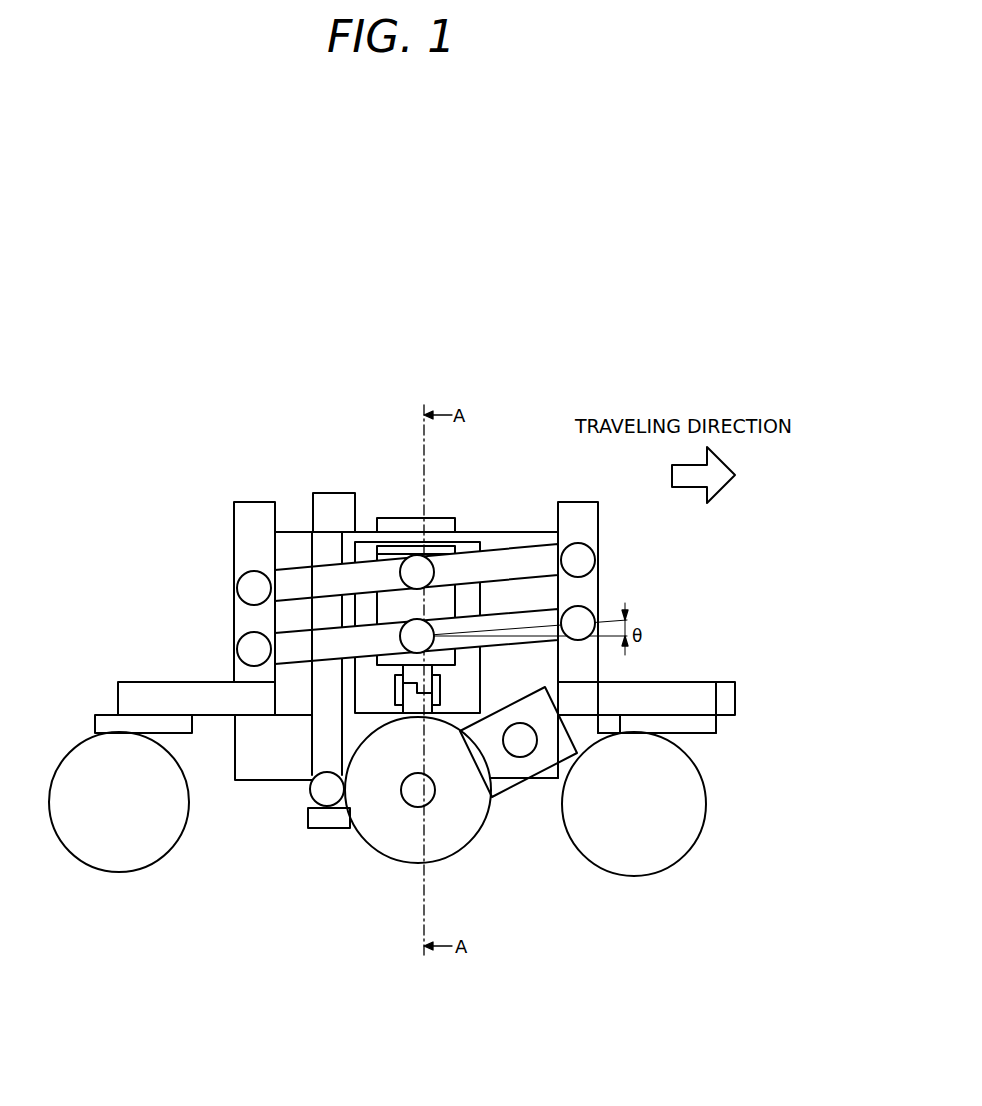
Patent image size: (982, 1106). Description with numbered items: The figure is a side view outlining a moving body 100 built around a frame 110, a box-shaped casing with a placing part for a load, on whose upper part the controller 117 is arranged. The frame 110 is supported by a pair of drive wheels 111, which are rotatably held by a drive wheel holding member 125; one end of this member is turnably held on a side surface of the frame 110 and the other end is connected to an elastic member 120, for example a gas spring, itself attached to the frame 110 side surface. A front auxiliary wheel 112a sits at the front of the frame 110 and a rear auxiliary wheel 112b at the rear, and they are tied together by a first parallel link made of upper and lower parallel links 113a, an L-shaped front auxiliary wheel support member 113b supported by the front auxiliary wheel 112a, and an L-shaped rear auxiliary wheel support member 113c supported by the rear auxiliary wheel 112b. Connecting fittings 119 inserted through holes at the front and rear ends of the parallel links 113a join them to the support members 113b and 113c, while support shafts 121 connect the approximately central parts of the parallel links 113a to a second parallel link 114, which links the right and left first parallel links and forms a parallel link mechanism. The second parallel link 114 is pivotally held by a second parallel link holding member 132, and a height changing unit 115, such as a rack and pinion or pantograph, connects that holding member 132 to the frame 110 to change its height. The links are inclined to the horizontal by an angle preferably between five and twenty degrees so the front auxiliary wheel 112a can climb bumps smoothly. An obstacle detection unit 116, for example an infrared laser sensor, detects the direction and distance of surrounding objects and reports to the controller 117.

The moving body 100 is at (168, 398).
The frame 110 is at (312, 548).
The drive wheel 111 is at (440, 835).
The front auxiliary wheel 112a is at (635, 853).
The rear auxiliary wheel 112b is at (122, 857).
The parallel link 113a is at (510, 563).
The front auxiliary wheel support member 113b is at (583, 512).
The rear auxiliary wheel support member 113c is at (243, 510).
The second parallel link 114 is at (455, 545).
The height changing unit 115 is at (412, 708).
The obstacle detection unit 116 is at (725, 700).
The controller 117 is at (340, 502).
The connecting fitting 119 is at (248, 588).
The elastic member 120 is at (327, 740).
The support shaft 121 is at (441, 625).
The drive wheel holding member 125 is at (505, 777).
The second parallel link holding member 132 is at (405, 525).